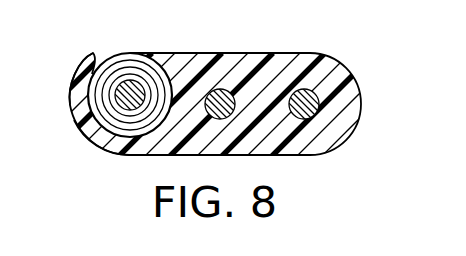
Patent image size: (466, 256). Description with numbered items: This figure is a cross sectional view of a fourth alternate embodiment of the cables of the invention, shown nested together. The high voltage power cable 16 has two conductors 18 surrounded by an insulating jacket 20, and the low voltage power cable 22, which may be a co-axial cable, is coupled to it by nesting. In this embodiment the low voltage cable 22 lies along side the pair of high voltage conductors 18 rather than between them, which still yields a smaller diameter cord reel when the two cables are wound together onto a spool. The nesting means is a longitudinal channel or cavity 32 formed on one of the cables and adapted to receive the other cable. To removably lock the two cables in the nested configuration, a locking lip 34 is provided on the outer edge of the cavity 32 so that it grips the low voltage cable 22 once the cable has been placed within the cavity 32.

The high voltage power cable 16 is at (325, 138).
The conductors 18 is at (223, 91).
The insulating jacket 20 is at (196, 62).
The low voltage power cable 22 is at (138, 58).
The cavity 32 is at (117, 155).
The locking lip 34 is at (72, 93).